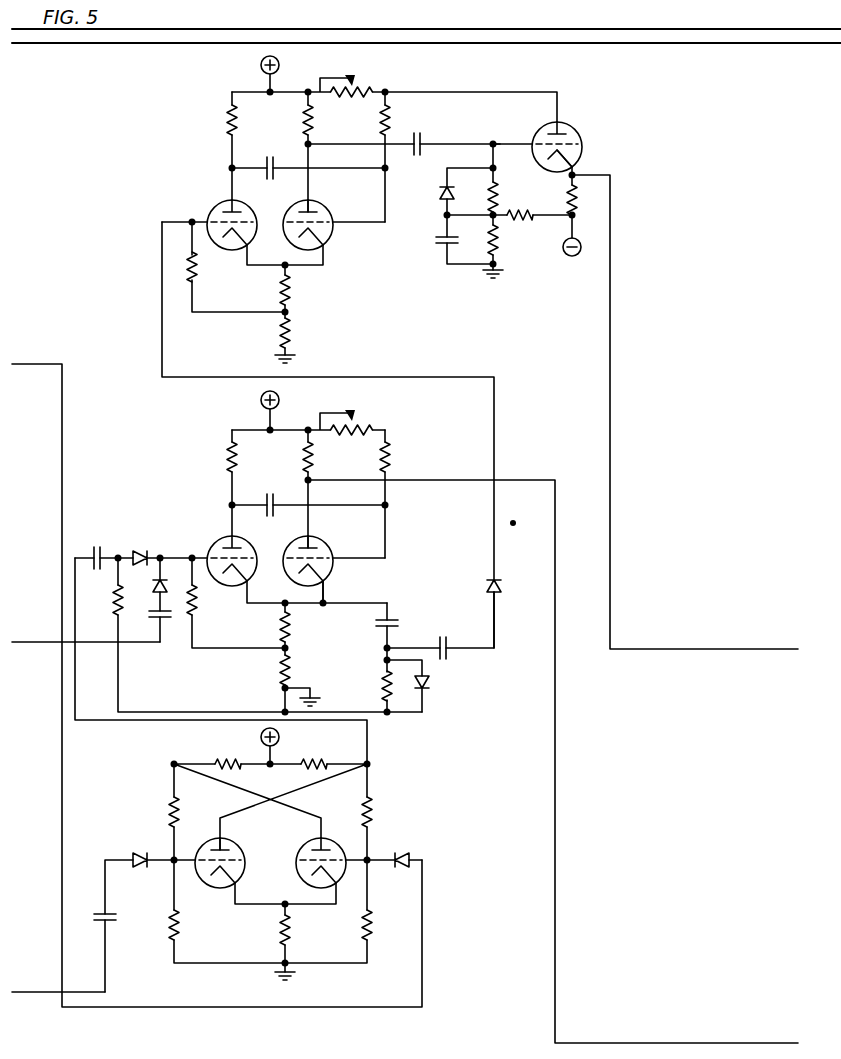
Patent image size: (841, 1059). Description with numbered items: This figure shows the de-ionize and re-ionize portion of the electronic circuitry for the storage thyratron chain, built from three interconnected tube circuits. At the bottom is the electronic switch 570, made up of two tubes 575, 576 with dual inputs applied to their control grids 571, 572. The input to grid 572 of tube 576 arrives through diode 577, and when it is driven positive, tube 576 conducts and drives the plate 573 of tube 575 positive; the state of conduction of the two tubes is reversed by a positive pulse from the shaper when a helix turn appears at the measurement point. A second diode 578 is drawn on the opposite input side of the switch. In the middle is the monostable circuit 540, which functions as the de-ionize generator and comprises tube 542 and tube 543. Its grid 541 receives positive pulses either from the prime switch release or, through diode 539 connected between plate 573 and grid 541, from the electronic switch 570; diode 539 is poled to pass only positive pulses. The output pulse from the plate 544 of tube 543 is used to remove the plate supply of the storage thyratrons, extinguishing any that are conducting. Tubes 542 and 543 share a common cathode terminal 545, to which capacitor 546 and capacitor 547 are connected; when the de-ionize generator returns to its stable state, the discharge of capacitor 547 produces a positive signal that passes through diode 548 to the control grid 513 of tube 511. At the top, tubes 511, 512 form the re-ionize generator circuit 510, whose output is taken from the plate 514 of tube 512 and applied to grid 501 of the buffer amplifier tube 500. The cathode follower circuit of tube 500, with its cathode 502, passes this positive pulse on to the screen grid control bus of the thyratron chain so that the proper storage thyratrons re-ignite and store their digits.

The buffer amplifier tube 500 is at (541, 127).
The grid 501 is at (508, 148).
The cathode of tube 500 502 is at (573, 161).
The re-ionize generator circuit 510 is at (122, 168).
The tube 511 is at (219, 210).
The tube 512 is at (331, 212).
The control grid 513 is at (191, 218).
The plate 514 is at (302, 210).
The diode 539 is at (141, 551).
The monostable circuit 540 is at (132, 503).
The grid 541 is at (206, 552).
The tube 542 is at (199, 603).
The tube 543 is at (333, 560).
The anode of tube 543 544 is at (316, 546).
The common cathode terminal 545 is at (326, 602).
The capacitor 546 is at (392, 621).
The capacitor 547 is at (446, 652).
The diode 548 is at (503, 587).
The electronic switch 570 is at (254, 849).
The control grid 571 is at (206, 857).
The control grid 572 is at (356, 857).
The plate 573 is at (228, 846).
The tube 575 is at (215, 887).
The tube 576 is at (302, 889).
The diode 577 is at (412, 857).
The diode 578 is at (138, 856).